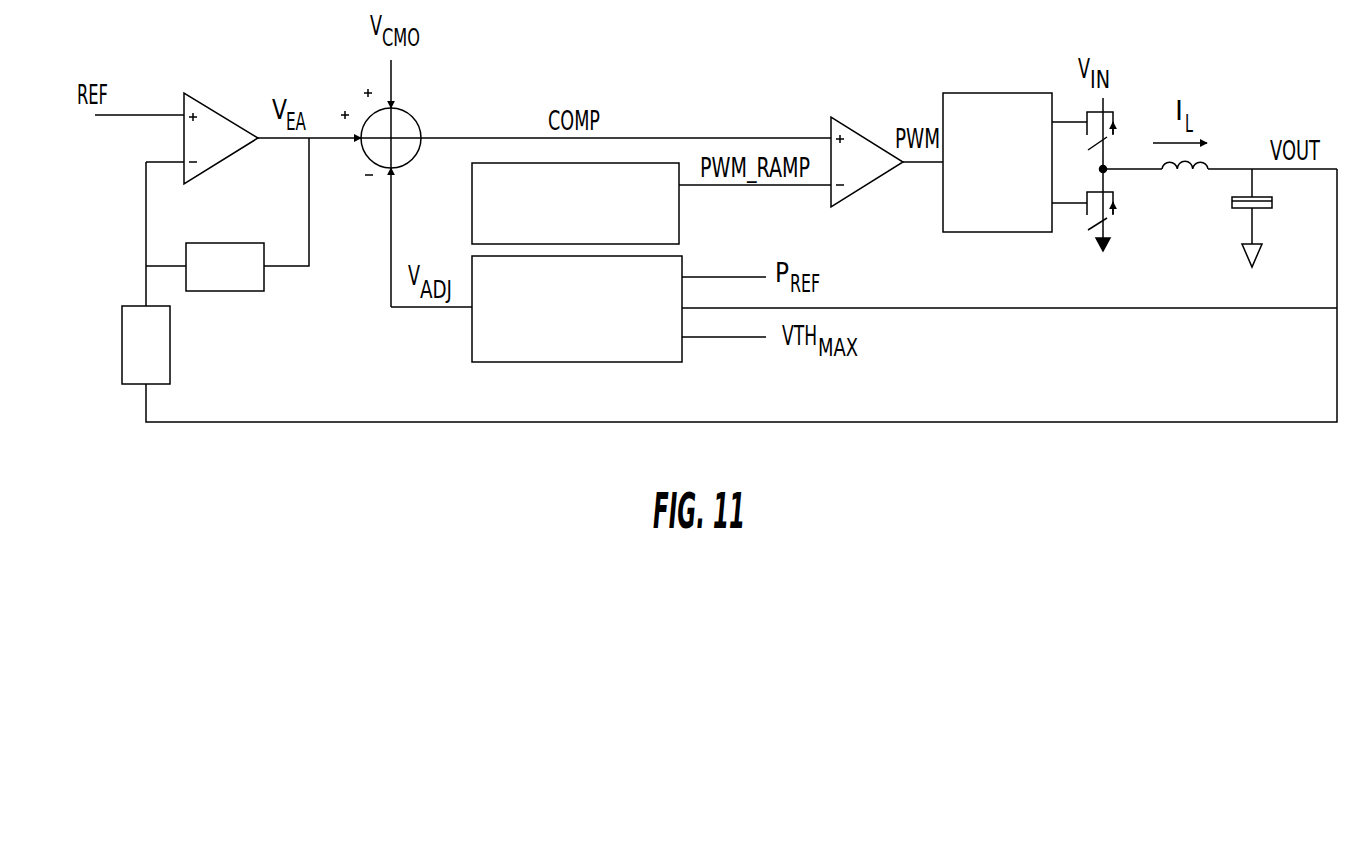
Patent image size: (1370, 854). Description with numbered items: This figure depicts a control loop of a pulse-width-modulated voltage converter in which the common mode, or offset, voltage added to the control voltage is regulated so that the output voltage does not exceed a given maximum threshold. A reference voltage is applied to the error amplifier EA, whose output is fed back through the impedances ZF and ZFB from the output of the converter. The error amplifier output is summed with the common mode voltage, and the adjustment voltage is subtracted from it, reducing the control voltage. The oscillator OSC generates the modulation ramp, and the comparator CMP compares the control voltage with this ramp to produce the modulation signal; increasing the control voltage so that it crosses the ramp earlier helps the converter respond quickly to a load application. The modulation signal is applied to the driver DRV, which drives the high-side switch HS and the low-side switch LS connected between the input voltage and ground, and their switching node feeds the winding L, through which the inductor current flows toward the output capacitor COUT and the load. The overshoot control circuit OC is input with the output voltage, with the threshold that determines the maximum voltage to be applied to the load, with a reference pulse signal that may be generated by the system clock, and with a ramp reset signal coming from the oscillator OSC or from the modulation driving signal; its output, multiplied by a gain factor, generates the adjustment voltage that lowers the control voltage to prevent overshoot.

The error amplifier EA is at (221, 138).
The feedback impedance ZF is at (225, 267).
The feedback divider impedance ZFB is at (146, 345).
The PWM oscillator OSC is at (575, 203).
The overshoot control circuit OC is at (577, 309).
The PWM comparator CMP is at (855, 133).
The MOS driver DRV is at (997, 162).
The high-side switch HS is at (1084, 133).
The low-side switch LS is at (1084, 210).
The winding L is at (1185, 186).
The output capacitor COUT is at (1275, 218).